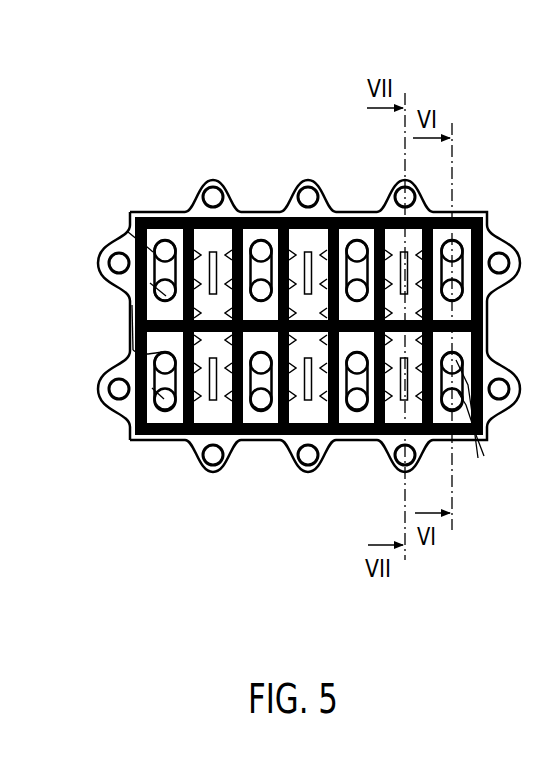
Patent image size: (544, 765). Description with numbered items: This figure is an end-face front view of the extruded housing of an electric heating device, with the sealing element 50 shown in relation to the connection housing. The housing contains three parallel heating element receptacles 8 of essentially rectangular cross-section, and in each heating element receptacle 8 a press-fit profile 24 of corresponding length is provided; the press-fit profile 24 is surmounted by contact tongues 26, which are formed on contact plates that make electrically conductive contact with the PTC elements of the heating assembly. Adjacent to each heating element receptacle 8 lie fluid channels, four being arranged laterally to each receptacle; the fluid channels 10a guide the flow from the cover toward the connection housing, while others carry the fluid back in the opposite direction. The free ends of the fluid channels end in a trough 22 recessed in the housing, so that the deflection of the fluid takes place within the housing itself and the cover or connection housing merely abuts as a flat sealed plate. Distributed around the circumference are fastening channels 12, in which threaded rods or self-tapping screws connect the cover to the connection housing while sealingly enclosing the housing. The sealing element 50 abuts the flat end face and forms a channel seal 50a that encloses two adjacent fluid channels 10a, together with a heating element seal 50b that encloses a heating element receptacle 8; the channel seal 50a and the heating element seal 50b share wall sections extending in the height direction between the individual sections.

The heating element receptacle 8 is at (241, 216).
The fluid channel 10a is at (128, 232).
The fastening channel 12 is at (203, 461).
The trough 22 is at (107, 280).
The press-fit profile 24 is at (324, 231).
The contact tongue 26 is at (212, 252).
The sealing element 50 is at (161, 211).
The channel seal 50a is at (133, 226).
The heating element seal 50b is at (289, 214).